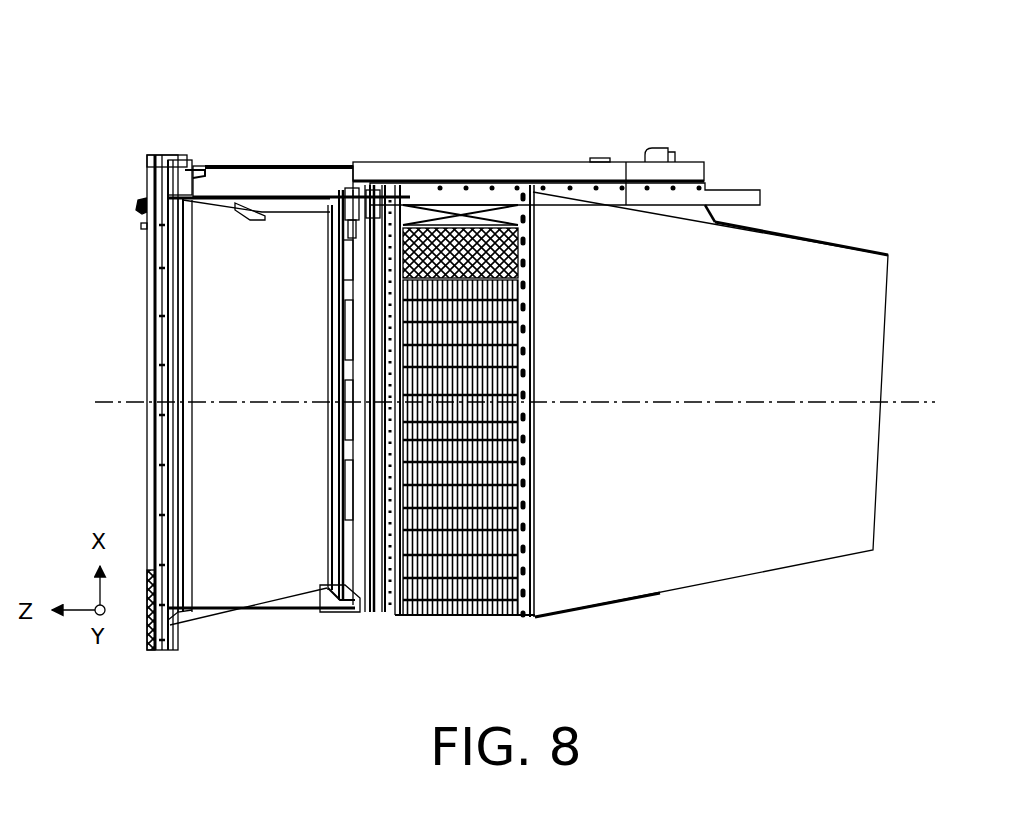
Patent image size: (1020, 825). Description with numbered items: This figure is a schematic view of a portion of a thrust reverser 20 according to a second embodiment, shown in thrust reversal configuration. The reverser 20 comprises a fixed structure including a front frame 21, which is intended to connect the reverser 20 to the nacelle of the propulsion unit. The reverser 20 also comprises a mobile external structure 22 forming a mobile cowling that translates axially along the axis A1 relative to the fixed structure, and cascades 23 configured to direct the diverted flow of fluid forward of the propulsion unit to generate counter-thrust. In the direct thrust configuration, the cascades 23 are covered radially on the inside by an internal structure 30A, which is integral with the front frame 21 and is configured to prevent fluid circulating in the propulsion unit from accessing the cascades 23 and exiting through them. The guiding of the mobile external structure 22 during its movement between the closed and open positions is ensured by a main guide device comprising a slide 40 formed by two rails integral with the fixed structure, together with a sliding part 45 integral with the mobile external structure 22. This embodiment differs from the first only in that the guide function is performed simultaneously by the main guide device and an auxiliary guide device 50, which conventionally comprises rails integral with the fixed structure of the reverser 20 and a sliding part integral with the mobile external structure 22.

The reverser 20 is at (765, 91).
The front frame 21 is at (165, 285).
The mobile external structure 22 is at (720, 572).
The cascades 23 is at (447, 617).
The internal structure 30A is at (273, 540).
The slide 40 is at (213, 175).
The sliding part 45 is at (583, 173).
The auxiliary guide device 50 is at (323, 602).
The axis A1 is at (127, 402).